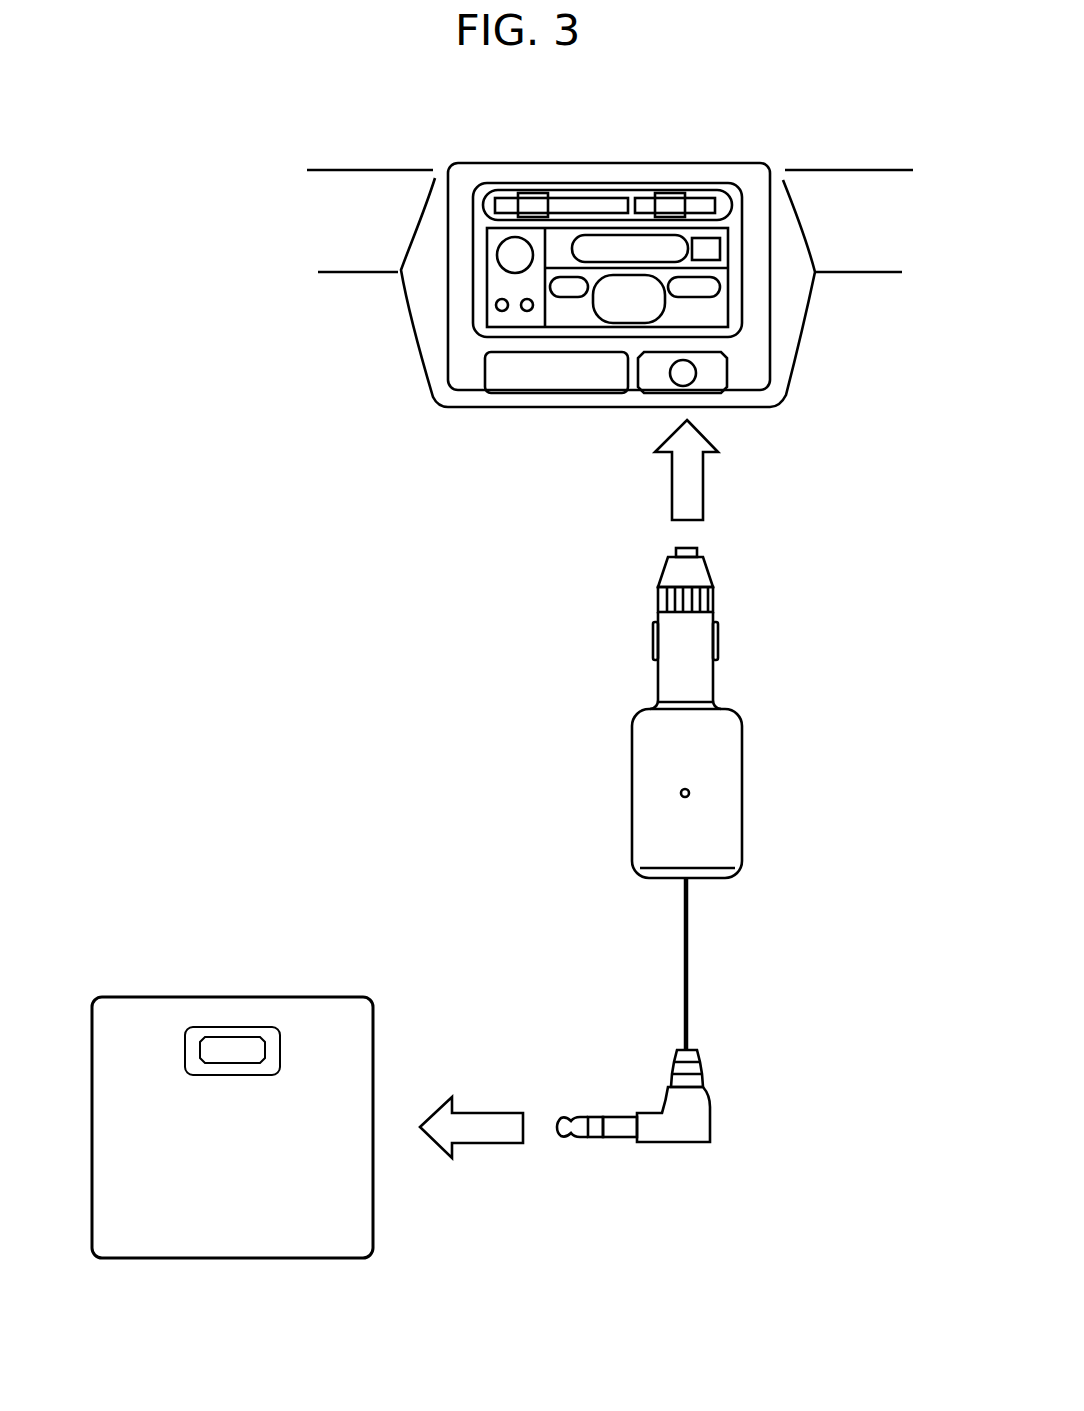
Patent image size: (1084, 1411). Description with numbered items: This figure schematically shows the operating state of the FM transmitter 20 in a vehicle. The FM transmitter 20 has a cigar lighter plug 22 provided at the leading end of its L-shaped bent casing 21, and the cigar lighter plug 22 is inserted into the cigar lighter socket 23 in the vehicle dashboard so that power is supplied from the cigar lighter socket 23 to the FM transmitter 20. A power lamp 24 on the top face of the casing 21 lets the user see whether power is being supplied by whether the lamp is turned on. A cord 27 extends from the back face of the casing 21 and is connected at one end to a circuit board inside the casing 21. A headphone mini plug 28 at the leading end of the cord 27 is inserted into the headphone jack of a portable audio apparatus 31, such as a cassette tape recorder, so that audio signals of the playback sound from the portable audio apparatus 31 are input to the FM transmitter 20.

The FM transmitter 20 is at (709, 713).
The casing 21 is at (730, 832).
The cigar lighter plug 22 is at (663, 675).
The cigar lighter socket 23 is at (686, 375).
The power lamp 24 is at (680, 793).
The cord 27 is at (688, 977).
The headphone mini plug 28 is at (680, 1132).
The portable audio apparatus 31 is at (227, 1252).